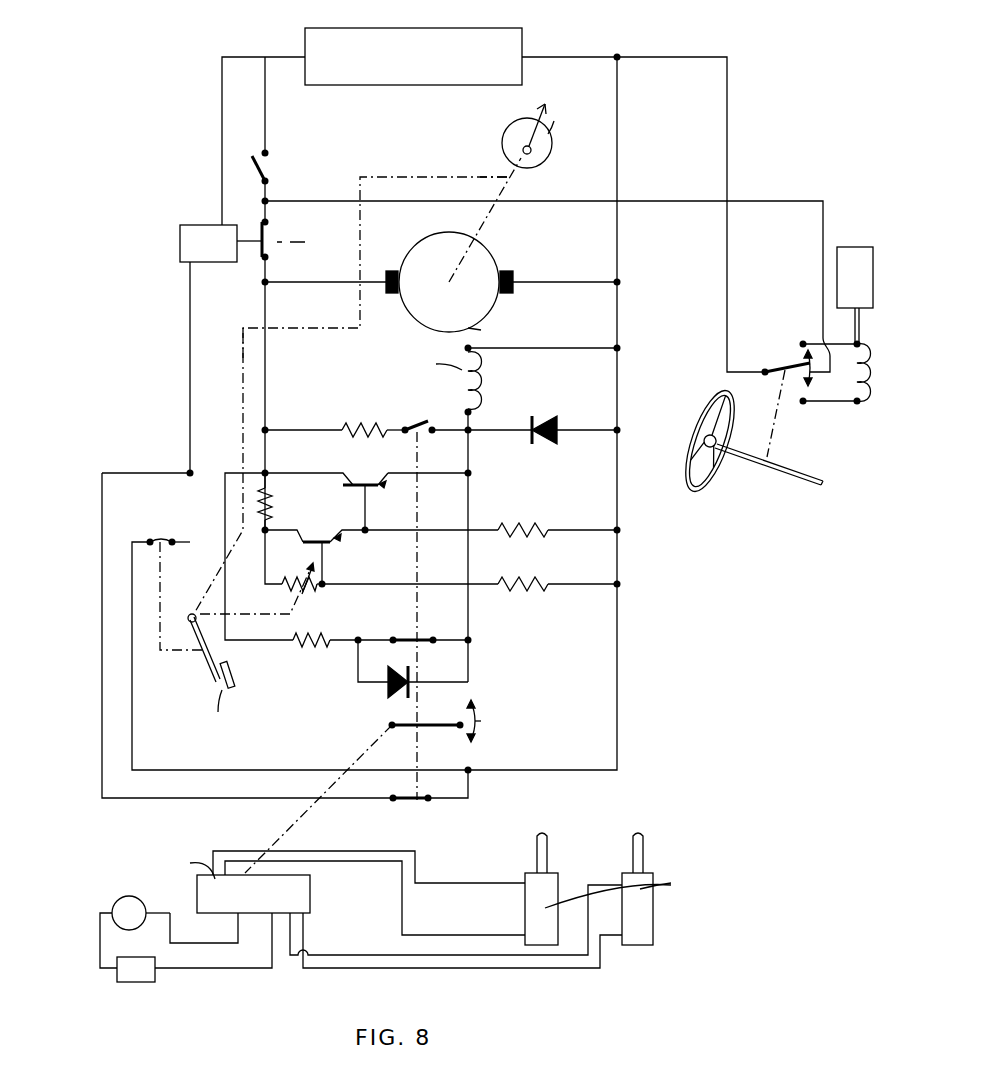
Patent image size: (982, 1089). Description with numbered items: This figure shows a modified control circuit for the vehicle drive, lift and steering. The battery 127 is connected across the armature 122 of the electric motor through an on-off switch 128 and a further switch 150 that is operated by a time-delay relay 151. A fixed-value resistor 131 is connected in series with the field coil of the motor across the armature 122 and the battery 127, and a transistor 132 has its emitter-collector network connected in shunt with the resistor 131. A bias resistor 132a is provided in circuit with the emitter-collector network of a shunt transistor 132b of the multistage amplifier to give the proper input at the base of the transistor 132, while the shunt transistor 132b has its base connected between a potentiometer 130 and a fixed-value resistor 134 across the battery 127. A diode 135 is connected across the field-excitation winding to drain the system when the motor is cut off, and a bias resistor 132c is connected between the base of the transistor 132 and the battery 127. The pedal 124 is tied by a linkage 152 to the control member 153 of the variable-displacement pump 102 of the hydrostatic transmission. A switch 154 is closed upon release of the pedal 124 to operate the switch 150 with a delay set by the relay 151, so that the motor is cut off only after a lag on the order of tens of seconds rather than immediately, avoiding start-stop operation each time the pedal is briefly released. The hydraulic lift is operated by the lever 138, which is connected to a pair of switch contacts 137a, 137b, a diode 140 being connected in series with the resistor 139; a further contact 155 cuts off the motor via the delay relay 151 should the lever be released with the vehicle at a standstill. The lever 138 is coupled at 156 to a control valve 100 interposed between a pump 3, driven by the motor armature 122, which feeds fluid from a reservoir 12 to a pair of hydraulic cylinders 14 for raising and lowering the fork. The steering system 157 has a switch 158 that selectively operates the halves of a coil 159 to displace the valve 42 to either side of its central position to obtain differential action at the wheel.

The battery 127 is at (500, 31).
The variable-displacement pump 102 is at (547, 151).
The control member 153 is at (507, 177).
The armature 122 is at (493, 261).
The on-off switch 128 is at (268, 178).
The time-delay relay 151 is at (180, 228).
The switch 150 is at (268, 242).
The linkage 152 is at (243, 334).
The fixed-value resistor 131 is at (345, 428).
The switch contact 137b is at (428, 421).
The diode 135 is at (553, 425).
The bias resistor 132a is at (272, 501).
The transistor 132 is at (372, 488).
The shunt transistor 132b is at (330, 546).
The bias resistor 132c is at (510, 524).
The potentiometer 130 is at (304, 593).
The fixed-value resistor 134 is at (512, 594).
The resistor 139 is at (297, 646).
The switch contact 137a is at (405, 637).
The diode 140 is at (385, 684).
The lever 138 is at (426, 724).
The coupling 156 is at (368, 743).
The contact 155 is at (418, 801).
The switch 154 is at (163, 541).
The pedal 124 is at (212, 682).
The switch 158 is at (777, 369).
The valve 42 is at (851, 247).
The coil 159 is at (867, 403).
The steering system 157 is at (772, 468).
The control valve 100 is at (312, 902).
The pump 3 is at (146, 905).
The reservoir 12 is at (153, 979).
The hydraulic cylinders 14 is at (556, 881).